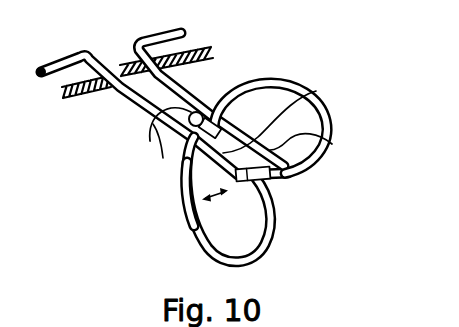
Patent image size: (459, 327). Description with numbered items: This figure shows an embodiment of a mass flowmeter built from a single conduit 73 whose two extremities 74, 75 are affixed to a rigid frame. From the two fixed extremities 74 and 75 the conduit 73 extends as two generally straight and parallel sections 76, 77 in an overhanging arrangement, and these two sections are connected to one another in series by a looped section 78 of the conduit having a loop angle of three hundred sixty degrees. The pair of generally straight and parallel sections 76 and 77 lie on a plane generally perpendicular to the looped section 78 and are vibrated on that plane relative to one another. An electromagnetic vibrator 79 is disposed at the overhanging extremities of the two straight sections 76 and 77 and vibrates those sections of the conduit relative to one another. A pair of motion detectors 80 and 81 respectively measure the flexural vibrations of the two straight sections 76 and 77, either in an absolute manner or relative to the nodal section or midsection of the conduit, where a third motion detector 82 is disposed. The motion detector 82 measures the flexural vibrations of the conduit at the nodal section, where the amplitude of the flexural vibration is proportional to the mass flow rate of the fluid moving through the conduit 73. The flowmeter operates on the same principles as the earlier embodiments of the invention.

The conduit 73 is at (278, 223).
The fixed extremity of the conduit 74 is at (112, 88).
The fixed extremity of the conduit 75 is at (202, 75).
The generally straight and parallel section of the conduit 76 is at (190, 194).
The generally straight and parallel section of the conduit 77 is at (332, 144).
The looped section of the conduit 78 is at (271, 80).
The electromagnetic vibrator 79 is at (267, 183).
The motion detector 80 is at (188, 140).
The motion detector 81 is at (316, 91).
The third motion detector 82 is at (190, 132).